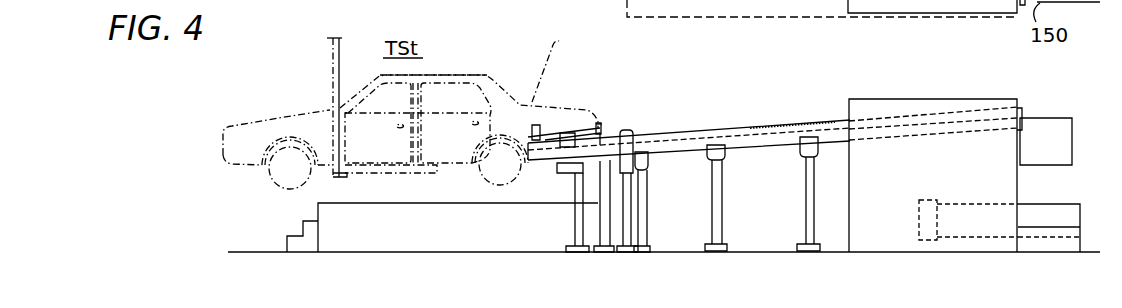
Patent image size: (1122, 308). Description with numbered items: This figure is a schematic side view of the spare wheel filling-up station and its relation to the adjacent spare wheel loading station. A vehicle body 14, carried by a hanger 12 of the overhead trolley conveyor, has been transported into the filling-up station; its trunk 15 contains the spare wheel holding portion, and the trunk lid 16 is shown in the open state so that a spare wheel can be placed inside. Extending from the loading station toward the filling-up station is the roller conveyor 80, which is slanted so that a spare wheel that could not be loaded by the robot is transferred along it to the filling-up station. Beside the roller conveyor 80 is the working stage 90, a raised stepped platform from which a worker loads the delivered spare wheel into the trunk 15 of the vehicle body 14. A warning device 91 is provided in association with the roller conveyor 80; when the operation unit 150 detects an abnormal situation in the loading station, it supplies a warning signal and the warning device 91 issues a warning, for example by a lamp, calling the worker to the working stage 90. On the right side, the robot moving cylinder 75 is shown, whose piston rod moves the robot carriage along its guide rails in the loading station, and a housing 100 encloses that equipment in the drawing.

The hanger 12 is at (330, 101).
The vehicle body 14 is at (463, 76).
The trunk 15 is at (585, 117).
The trunk lid 16 is at (549, 64).
The robot moving cylinder 75 is at (1038, 211).
The roller conveyor 80 is at (760, 140).
The working stage 90 is at (439, 215).
The warning device 91 is at (623, 130).
The housing 100 is at (863, 106).
The operation unit 150 is at (1047, 126).